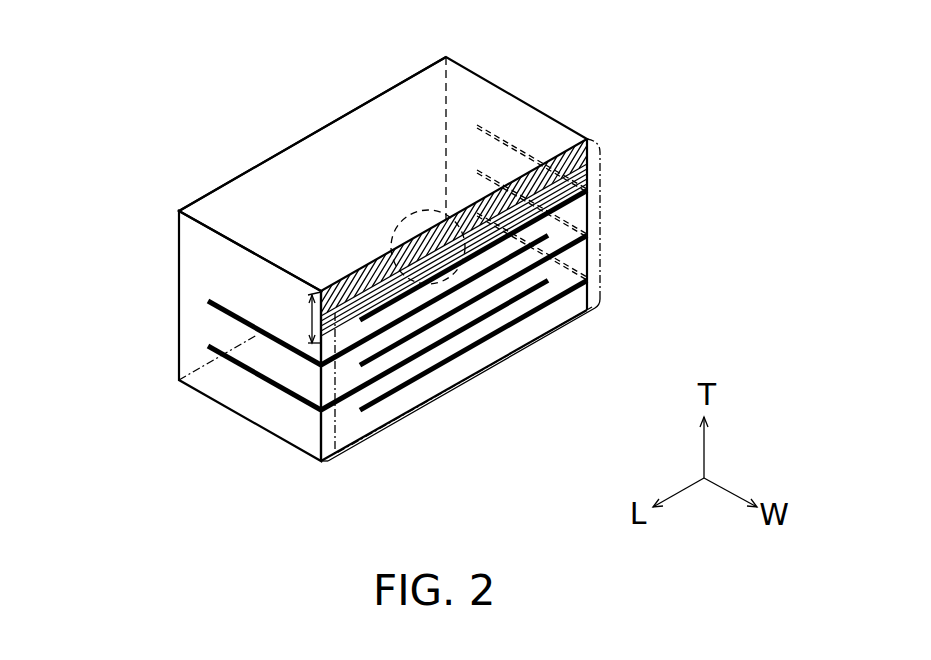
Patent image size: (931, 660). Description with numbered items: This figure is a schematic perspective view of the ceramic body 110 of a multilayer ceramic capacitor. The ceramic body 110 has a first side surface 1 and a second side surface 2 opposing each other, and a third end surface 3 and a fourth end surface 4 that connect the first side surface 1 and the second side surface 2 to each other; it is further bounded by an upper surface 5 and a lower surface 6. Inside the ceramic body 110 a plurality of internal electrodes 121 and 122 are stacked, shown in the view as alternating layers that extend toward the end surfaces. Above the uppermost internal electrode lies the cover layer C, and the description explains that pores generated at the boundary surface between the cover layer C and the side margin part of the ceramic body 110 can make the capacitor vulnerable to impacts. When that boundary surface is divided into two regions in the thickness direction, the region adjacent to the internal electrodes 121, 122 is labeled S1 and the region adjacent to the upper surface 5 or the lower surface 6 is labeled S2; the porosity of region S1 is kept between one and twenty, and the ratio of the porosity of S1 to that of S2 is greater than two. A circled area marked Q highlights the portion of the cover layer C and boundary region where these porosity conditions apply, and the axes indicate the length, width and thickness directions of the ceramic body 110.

The first side surface 1 is at (253, 213).
The second side surface 2 is at (497, 343).
The third end surface 3 is at (190, 332).
The fourth end surface 4 is at (493, 118).
The upper surface 5 is at (353, 143).
The lower surface 6 is at (247, 403).
The ceramic body 110 is at (372, 209).
The internal electrode 121 is at (210, 300).
The internal electrode 122 is at (580, 205).
The region adjacent to the internal electrode S1 is at (578, 174).
The region adjacent to upper or lower surface S2 is at (600, 150).
The cover layer C is at (306, 317).
The region Q is at (447, 283).